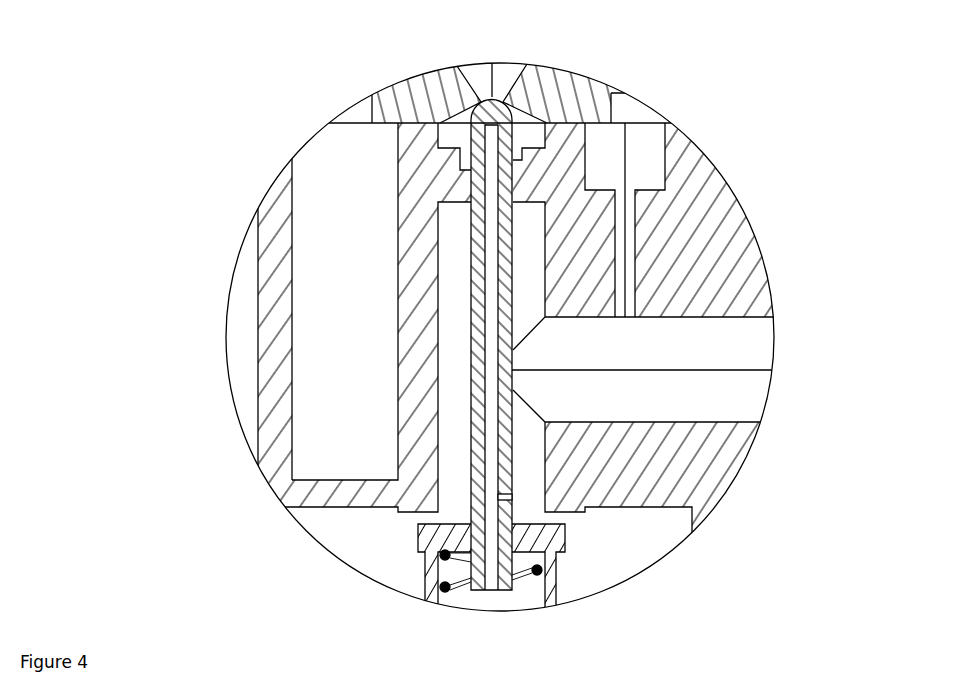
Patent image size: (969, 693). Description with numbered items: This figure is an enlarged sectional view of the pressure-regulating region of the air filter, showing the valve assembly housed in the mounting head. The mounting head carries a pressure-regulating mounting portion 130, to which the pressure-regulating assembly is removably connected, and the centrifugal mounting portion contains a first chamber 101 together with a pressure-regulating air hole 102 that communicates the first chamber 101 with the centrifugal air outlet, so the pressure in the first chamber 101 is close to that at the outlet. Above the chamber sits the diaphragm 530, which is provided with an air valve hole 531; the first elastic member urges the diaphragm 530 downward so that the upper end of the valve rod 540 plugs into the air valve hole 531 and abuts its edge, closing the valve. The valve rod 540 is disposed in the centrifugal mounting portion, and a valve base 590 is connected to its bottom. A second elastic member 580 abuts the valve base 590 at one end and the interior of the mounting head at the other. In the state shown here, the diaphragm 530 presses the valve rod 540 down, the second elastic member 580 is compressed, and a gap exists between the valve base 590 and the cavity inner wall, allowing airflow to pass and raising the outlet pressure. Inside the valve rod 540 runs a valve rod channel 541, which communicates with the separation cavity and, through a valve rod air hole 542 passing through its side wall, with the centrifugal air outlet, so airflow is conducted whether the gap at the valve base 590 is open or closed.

The first chamber 101 is at (357, 129).
The pressure-regulating air hole 102 is at (628, 212).
The pressure-regulating mounting portion 130 is at (280, 352).
The diaphragm 530 is at (392, 107).
The air valve hole 531 is at (498, 90).
The valve rod 540 is at (477, 310).
The valve rod channel 541 is at (493, 365).
The valve rod air hole 542 is at (508, 496).
The second elastic member 580 is at (543, 569).
The valve base 590 is at (438, 537).